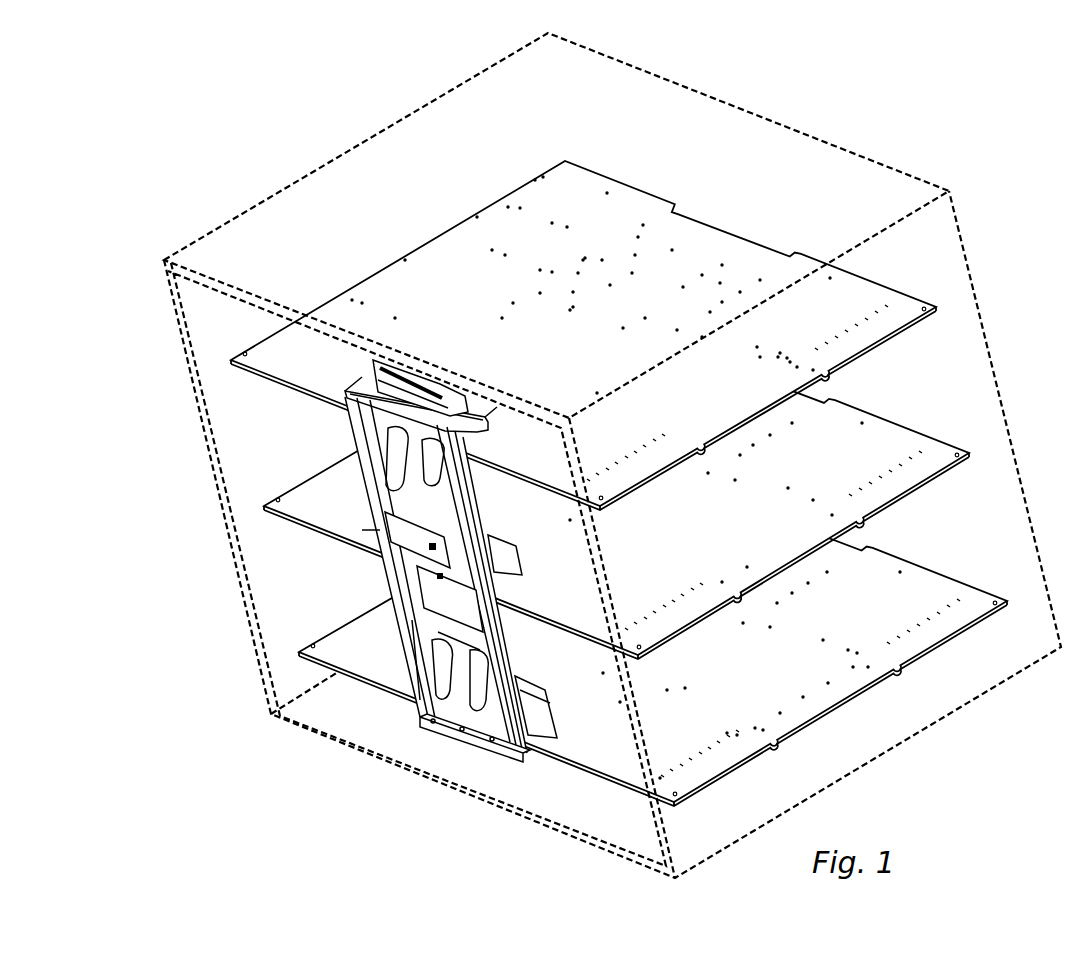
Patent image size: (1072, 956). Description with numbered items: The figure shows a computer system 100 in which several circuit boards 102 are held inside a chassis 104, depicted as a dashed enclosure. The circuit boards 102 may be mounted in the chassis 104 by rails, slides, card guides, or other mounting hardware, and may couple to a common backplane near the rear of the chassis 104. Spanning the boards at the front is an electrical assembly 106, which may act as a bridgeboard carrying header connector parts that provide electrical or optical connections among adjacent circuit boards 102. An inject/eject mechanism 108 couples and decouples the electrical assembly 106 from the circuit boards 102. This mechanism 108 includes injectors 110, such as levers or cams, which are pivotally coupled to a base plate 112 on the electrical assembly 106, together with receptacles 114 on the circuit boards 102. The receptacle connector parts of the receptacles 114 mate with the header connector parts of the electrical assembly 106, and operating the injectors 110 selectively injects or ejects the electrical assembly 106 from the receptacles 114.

The computer system 100 is at (580, 455).
The circuit board 102 is at (395, 272).
The chassis 104 is at (163, 277).
The electrical assembly 106 is at (408, 509).
The inject/eject mechanism 108 is at (372, 361).
The injector 110 is at (360, 424).
The base plate 112 is at (450, 712).
The receptacle 114 is at (483, 427).